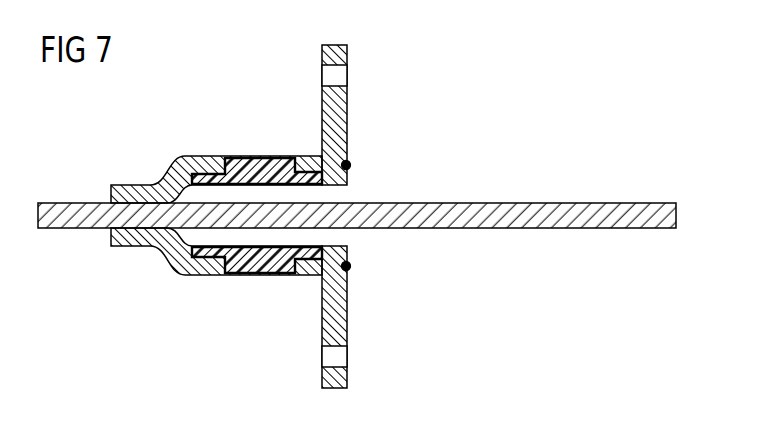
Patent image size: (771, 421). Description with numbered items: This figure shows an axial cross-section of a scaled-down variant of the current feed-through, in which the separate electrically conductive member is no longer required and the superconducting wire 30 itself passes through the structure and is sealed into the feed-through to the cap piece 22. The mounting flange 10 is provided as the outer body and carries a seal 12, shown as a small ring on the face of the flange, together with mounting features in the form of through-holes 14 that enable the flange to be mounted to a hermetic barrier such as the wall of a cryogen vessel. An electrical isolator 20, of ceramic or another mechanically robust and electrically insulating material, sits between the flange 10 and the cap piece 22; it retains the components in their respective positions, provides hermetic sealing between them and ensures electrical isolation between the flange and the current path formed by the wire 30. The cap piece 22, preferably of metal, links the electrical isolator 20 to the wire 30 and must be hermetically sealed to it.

The mounting flange 10 is at (338, 125).
The seal 12 is at (355, 165).
The through-holes 14 is at (338, 76).
The electrical isolator 20 is at (270, 158).
The cap piece 22 is at (141, 186).
The superconducting wire 30 is at (629, 212).